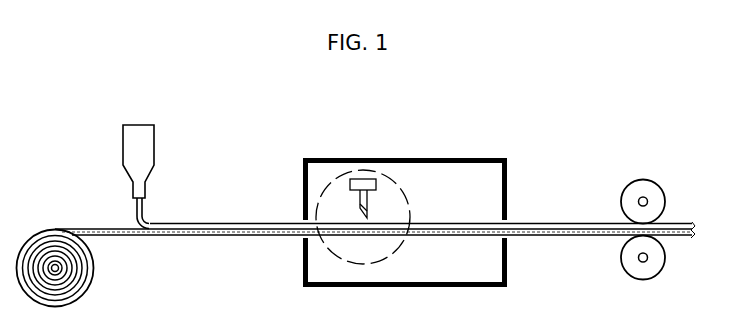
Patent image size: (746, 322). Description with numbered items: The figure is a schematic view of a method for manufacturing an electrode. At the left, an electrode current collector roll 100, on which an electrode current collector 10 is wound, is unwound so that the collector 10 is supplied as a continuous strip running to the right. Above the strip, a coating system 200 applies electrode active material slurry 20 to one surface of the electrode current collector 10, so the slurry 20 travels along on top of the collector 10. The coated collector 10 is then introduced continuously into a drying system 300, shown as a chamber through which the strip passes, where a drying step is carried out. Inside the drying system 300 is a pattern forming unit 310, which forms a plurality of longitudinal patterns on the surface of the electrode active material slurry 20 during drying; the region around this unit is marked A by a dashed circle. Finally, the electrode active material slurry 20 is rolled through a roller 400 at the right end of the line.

The electrode current collector 10 is at (103, 229).
The electrode active material slurry 20 is at (196, 224).
The electrode current collector roll 100 is at (93, 267).
The coating system 200 is at (140, 125).
The drying system 300 is at (468, 158).
The pattern forming unit 310 is at (362, 190).
The roller 400 is at (643, 180).
The enlarged region A is at (380, 171).